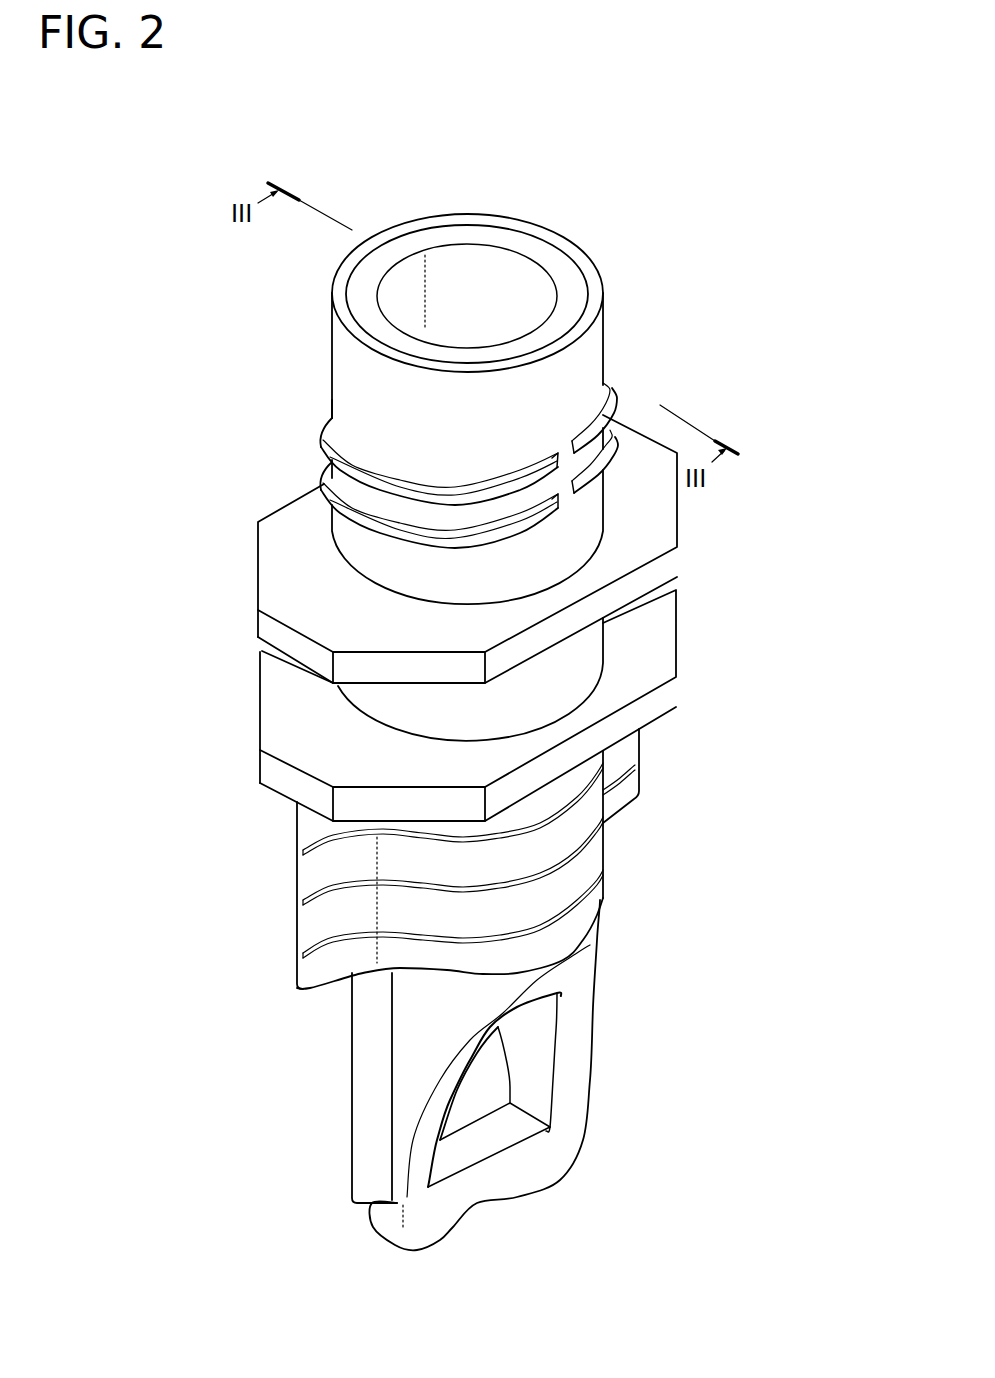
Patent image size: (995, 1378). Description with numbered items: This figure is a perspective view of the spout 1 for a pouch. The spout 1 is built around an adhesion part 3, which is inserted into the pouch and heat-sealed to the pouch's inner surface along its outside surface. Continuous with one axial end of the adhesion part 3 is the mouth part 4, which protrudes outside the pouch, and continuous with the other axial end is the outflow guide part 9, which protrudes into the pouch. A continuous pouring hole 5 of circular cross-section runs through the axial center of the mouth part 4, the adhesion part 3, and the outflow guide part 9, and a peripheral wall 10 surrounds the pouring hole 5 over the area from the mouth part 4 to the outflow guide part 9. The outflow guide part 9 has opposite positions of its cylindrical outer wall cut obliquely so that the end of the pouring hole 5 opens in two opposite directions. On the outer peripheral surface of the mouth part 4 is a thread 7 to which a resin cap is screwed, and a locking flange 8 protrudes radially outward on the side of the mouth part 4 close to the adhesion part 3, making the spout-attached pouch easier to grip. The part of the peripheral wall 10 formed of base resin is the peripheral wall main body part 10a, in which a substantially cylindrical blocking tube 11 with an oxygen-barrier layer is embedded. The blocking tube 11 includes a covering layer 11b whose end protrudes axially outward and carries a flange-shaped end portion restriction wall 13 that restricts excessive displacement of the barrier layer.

The spout 1 is at (620, 240).
The adhesion part 3 is at (403, 867).
The mouth part 4 is at (353, 538).
The pouring hole 5 is at (444, 258).
The thread 7 is at (607, 393).
The locking flange 8 is at (660, 563).
The outflow guide part 9 is at (412, 1040).
The peripheral wall 10 is at (596, 349).
The peripheral wall main body part 10a is at (432, 417).
The blocking tube 11 is at (495, 246).
The covering layer 11b is at (545, 255).
The end portion restriction wall 13 is at (580, 289).